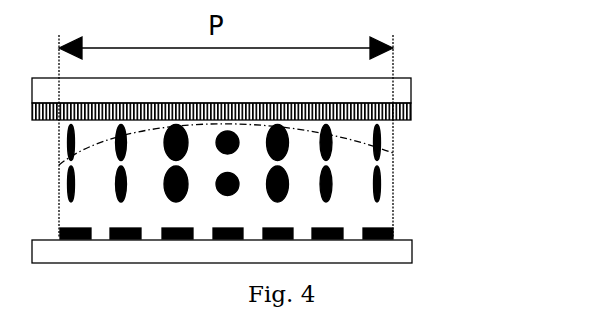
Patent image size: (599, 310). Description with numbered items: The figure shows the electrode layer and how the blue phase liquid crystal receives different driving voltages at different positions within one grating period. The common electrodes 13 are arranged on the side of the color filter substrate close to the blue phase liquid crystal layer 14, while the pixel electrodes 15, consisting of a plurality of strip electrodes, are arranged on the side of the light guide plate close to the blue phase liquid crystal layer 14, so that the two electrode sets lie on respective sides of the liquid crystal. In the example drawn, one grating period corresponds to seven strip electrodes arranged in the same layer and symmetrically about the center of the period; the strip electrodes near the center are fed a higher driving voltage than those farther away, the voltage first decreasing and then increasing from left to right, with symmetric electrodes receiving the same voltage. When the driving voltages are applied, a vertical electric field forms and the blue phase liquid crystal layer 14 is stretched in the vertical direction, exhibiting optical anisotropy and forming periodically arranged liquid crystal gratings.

The common electrodes 13 is at (413, 111).
The blue phase liquid crystal layer 14 is at (393, 153).
The pixel electrodes 15 is at (393, 232).